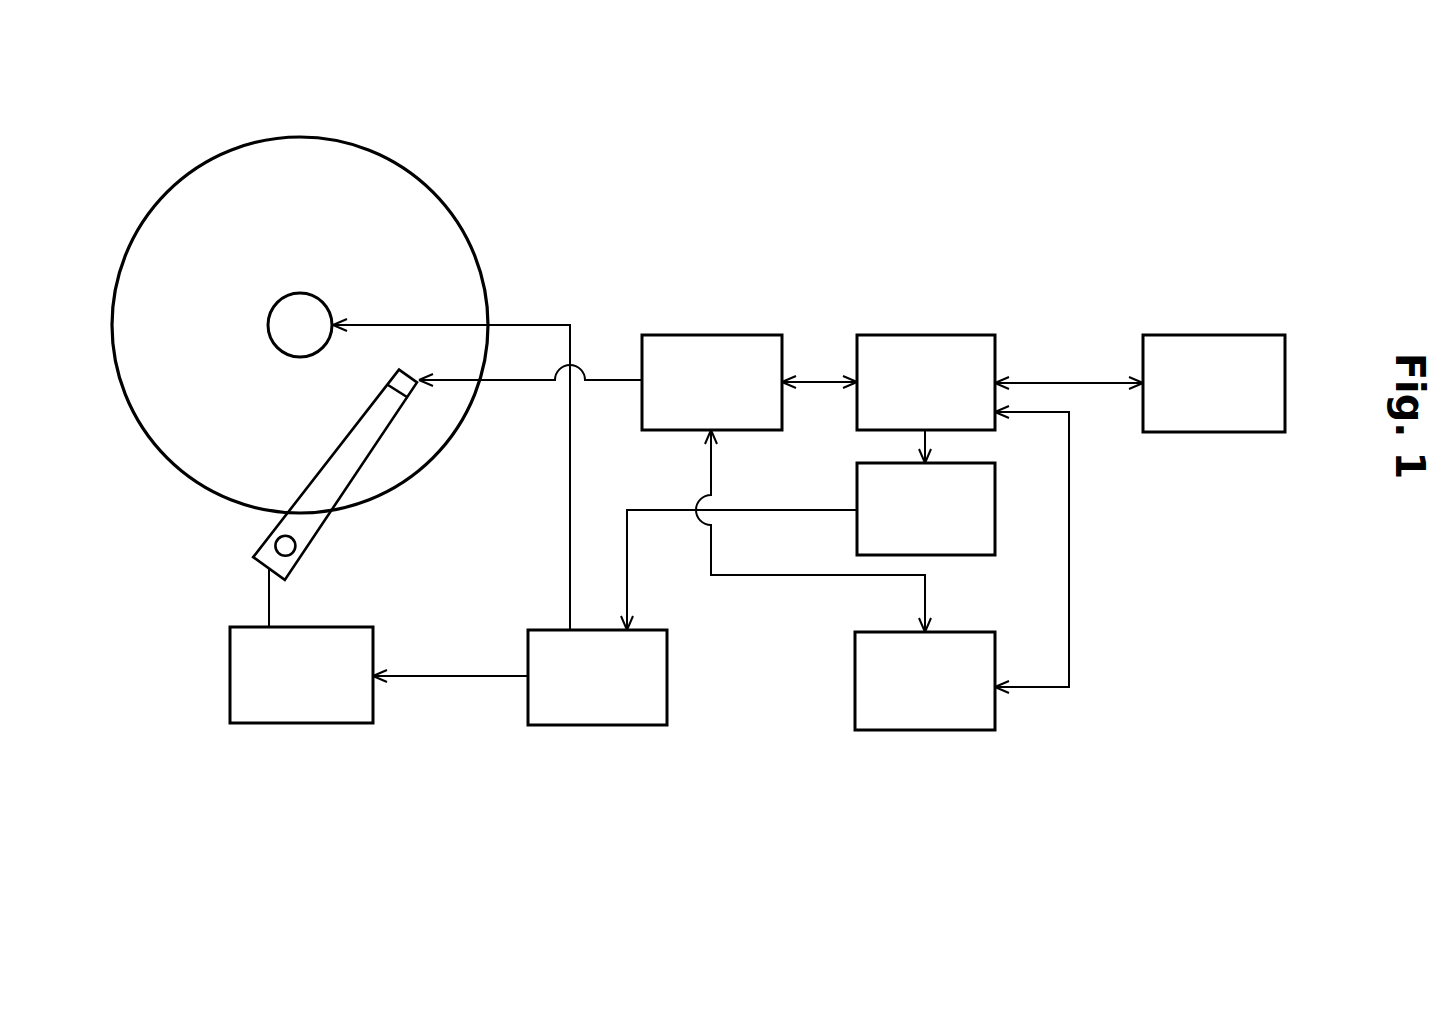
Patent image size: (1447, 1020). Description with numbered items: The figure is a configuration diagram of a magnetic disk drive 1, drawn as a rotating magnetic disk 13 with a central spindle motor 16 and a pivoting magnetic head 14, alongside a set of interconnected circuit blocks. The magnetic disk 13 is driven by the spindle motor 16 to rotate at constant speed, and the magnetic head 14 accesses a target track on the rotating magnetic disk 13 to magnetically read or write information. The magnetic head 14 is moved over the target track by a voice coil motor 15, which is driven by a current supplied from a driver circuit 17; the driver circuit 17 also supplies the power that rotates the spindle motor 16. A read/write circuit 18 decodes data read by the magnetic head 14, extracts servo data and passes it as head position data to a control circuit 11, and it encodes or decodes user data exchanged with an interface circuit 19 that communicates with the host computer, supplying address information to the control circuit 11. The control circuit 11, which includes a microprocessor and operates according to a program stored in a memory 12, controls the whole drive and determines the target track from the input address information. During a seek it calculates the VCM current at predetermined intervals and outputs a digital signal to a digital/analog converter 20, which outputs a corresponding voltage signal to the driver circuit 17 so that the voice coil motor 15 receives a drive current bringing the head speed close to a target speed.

The magnetic disk drive 1 is at (868, 186).
The control circuit 11 is at (926, 382).
The memory 12 is at (1214, 383).
The magnetic disk 13 is at (388, 154).
The magnetic head 14 is at (410, 367).
The voice coil motor (VCM) 15 is at (301, 675).
The spindle motor 16 is at (321, 294).
The driver circuit 17 is at (597, 677).
The read/write circuit 18 is at (712, 382).
The interface circuit 19 is at (925, 681).
The digital/analog converter (DAC) 20 is at (926, 509).